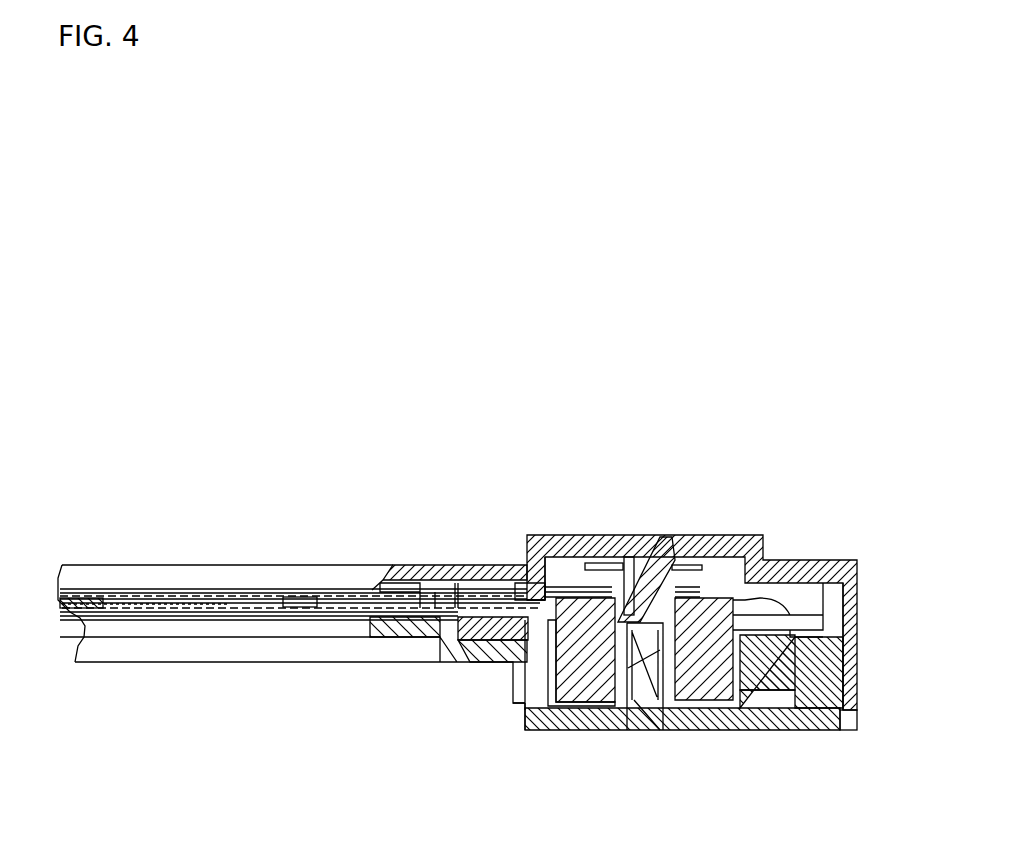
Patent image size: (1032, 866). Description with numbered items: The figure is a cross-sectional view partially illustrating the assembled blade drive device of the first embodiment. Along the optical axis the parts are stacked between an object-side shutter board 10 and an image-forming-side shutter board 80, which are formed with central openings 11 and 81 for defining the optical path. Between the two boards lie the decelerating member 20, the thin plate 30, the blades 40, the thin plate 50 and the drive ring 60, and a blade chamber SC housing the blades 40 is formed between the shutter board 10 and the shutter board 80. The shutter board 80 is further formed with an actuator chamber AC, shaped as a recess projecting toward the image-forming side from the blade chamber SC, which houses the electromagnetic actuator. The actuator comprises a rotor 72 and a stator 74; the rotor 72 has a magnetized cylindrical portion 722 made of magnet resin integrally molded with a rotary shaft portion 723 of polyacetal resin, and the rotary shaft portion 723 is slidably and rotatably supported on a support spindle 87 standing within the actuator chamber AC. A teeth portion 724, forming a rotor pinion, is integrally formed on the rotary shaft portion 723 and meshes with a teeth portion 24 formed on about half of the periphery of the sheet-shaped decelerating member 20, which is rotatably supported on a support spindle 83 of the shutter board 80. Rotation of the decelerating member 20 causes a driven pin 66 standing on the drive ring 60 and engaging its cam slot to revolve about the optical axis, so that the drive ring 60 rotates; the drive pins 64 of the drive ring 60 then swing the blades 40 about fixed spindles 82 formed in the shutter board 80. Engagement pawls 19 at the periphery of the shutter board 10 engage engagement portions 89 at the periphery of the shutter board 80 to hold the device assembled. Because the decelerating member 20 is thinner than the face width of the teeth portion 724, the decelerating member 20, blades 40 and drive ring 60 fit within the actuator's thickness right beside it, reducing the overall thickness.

The opening 11 is at (155, 572).
The blade chamber SC is at (208, 603).
The blades 40 is at (100, 606).
The fixed spindle 82 is at (305, 600).
The thin plate 30 is at (358, 584).
The driven pin 66 is at (455, 575).
The support spindle 83 is at (527, 577).
The thin plate 50 is at (288, 606).
The opening 81 is at (352, 650).
The drive pins 64 is at (400, 600).
The drive ring 60 is at (470, 640).
The shutter board 10 is at (748, 535).
The decelerating member 20 is at (555, 535).
The teeth portion 24 is at (595, 565).
The teeth portion 724 is at (622, 557).
The rotary shaft portion 723 is at (648, 548).
The actuator chamber AC is at (808, 592).
The engagement pawls 19 is at (857, 602).
The cylindrical portion 722 is at (562, 706).
The rotor 72 is at (578, 710).
The support spindle 87 is at (642, 728).
The stator 74 is at (765, 730).
The shutter board 80 is at (818, 730).
The engagement portions 89 is at (857, 719).